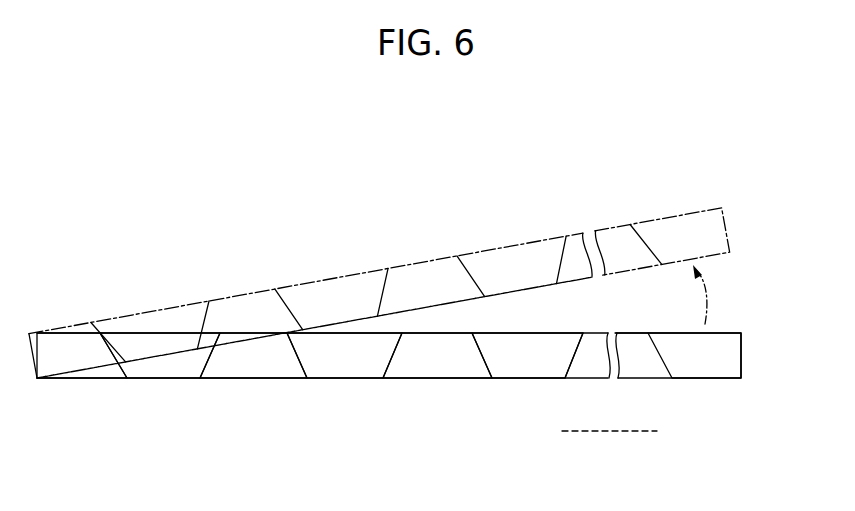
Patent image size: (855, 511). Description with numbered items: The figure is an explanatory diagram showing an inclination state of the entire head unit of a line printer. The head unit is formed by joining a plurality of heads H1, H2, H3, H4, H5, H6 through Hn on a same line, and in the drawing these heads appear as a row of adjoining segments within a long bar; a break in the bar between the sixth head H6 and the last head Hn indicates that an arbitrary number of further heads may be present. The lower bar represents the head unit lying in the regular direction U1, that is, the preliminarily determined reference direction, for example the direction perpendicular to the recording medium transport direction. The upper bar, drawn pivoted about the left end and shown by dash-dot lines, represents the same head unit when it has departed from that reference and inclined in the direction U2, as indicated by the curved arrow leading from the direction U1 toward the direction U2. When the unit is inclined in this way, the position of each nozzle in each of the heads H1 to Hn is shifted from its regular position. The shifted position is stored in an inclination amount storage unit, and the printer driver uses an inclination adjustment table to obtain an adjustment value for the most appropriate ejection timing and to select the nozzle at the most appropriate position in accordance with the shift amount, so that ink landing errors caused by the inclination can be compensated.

The regular direction of the head unit U1 is at (742, 353).
The inclined direction of the head unit U2 is at (723, 218).
The first head H1 is at (101, 372).
The second head H2 is at (169, 372).
The third head H3 is at (258, 372).
The fourth head H4 is at (344, 372).
The fifth head H5 is at (437, 372).
The sixth head H6 is at (526, 372).
The n-th head Hn is at (694, 372).